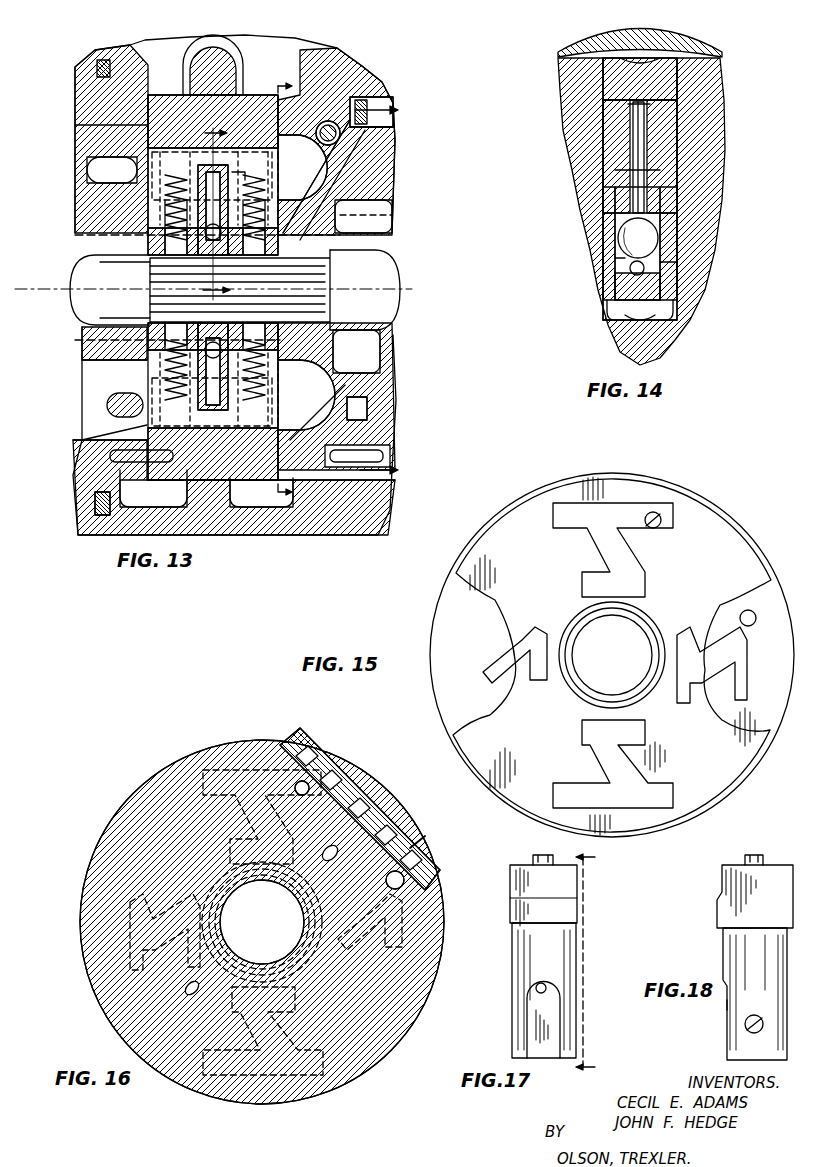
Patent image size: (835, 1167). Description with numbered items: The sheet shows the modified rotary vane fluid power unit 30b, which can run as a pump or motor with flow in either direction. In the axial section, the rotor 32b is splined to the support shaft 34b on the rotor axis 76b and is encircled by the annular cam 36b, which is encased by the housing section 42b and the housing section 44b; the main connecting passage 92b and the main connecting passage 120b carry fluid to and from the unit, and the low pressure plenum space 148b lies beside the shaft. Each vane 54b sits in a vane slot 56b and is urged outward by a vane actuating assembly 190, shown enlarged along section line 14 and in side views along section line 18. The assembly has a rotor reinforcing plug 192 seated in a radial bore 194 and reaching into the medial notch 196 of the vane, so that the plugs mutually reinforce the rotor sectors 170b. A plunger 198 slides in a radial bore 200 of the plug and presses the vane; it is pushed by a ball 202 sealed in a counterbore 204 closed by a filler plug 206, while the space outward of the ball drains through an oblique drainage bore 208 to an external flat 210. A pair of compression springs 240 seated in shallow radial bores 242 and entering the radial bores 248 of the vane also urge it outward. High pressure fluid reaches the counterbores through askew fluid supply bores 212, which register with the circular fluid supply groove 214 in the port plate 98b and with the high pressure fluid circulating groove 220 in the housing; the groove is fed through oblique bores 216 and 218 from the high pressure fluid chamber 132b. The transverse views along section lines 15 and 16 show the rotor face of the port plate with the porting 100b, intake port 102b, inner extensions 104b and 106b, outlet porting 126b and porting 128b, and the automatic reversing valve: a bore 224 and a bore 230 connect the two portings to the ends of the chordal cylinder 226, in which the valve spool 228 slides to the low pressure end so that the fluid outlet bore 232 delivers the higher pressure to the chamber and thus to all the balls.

In FIG. 13, the rotary vane fluid power unit 30b is at (372, 60).
In FIG. 13, the main connecting passage 92b is at (268, 48).
In FIG. 13, the vane 54b is at (162, 162).
In FIG. 14, the vane 54b is at (618, 82).
In FIG. 13, the porting 128b is at (276, 148).
In FIG. 15, the porting 128b is at (632, 530).
In FIG. 16, the porting 128b is at (204, 752).
In FIG. 13, the radial bore 248 is at (178, 165).
In FIG. 13, the shallow radial bore 242 is at (168, 232).
In FIG. 13, the rotor reinforcing plug 192 is at (204, 200).
In FIG. 14, the rotor reinforcing plug 192 is at (665, 133).
In FIG. 17, the rotor reinforcing plug 192 is at (558, 910).
In FIG. 18, the rotor reinforcing plug 192 is at (722, 917).
In FIG. 13, the medial notch 196 is at (238, 176).
In FIG. 14, the medial notch 196 is at (680, 104).
In FIG. 13, the chordal cylinder 226 is at (336, 137).
In FIG. 16, the chordal cylinder 226 is at (357, 810).
In FIG. 13, the fluid outlet bore 232 is at (356, 138).
In FIG. 16, the fluid outlet bore 232 is at (365, 828).
In FIG. 13, the high pressure fluid chamber 132b is at (375, 150).
In FIG. 13, the port plate 98b is at (385, 205).
In FIG. 16, the port plate 98b is at (148, 792).
In FIG. 13, the oblique bore 216 is at (318, 230).
In FIG. 13, the circular fluid supply groove 214 is at (290, 240).
In FIG. 15, the circular fluid supply groove 214 is at (652, 626).
In FIG. 16, the circular fluid supply groove 214 is at (225, 878).
In FIG. 13, the rotor axis 76b is at (48, 288).
In FIG. 13, the support shaft 34b is at (392, 305).
In FIG. 14, the support shaft 34b is at (642, 350).
In FIG. 13, the high pressure fluid circulating groove 220 is at (135, 340).
In FIG. 13, the oblique bore 218 is at (312, 375).
In FIG. 16, the oblique bore 218 is at (190, 995).
In FIG. 13, the low pressure plenum space 148b is at (366, 366).
In FIG. 13, the fluid supply bore 212 is at (155, 358).
In FIG. 14, the fluid supply bore 212 is at (648, 270).
In FIG. 18, the fluid supply bore 212 is at (747, 1029).
In FIG. 13, the compression spring 240 is at (165, 376).
In FIG. 13, the main connecting passage 120b is at (92, 407).
In FIG. 13, the vane actuating assembly 190 is at (210, 398).
In FIG. 14, the vane actuating assembly 190 is at (680, 155).
In FIG. 17, the vane actuating assembly 190 is at (582, 953).
In FIG. 18, the vane actuating assembly 190 is at (718, 960).
In FIG. 13, the housing section 42b is at (80, 475).
In FIG. 13, the annular cam 36b is at (176, 478).
In FIG. 14, the annular cam 36b is at (690, 38).
In FIG. 13, the housing section 44b is at (362, 518).
In FIG. 13, the section line 14— 14 is at (227, 213).
In FIG. 13, the section line 15— 15 is at (274, 283).
In FIG. 13, the section line 16— 16 is at (387, 291).
In FIG. 17, the section line 18— 18 is at (595, 962).
In FIG. 14, the rotor sector 170b is at (585, 147).
In FIG. 14, the vane slot 56b is at (603, 106).
In FIG. 14, the plunger 198 is at (640, 195).
In FIG. 17, the plunger 198 is at (533, 860).
In FIG. 18, the plunger 198 is at (745, 860).
In FIG. 14, the radial bore 200 is at (618, 170).
In FIG. 14, the oblique drainage bore 208 is at (614, 215).
In FIG. 17, the oblique drainage bore 208 is at (546, 988).
In FIG. 14, the ball 202 is at (642, 240).
In FIG. 14, the rotor 32b is at (592, 245).
In FIG. 14, the radial bore 194 is at (652, 262).
In FIG. 14, the external flat 210 is at (612, 258).
In FIG. 17, the external flat 210 is at (532, 1032).
In FIG. 18, the external flat 210 is at (727, 1008).
In FIG. 14, the counterbore 204 is at (616, 272).
In FIG. 14, the filler plug 206 is at (650, 292).
In FIG. 15, the porting 100b is at (777, 698).
In FIG. 16, the porting 100b is at (430, 967).
In FIG. 15, the intake port 102b is at (447, 642).
In FIG. 16, the intake port 102b is at (130, 900).
In FIG. 15, the inner extension 104b is at (735, 700).
In FIG. 15, the inner extension 106b is at (538, 683).
In FIG. 15, the outlet porting 126b is at (582, 782).
In FIG. 16, the outlet porting 126b is at (283, 1103).
In FIG. 15, the bore 224 is at (660, 526).
In FIG. 16, the bore 224 is at (303, 796).
In FIG. 15, the bore 230 is at (746, 610).
In FIG. 16, the bore 230 is at (386, 878).
In FIG. 16, the valve spool 228 is at (375, 842).